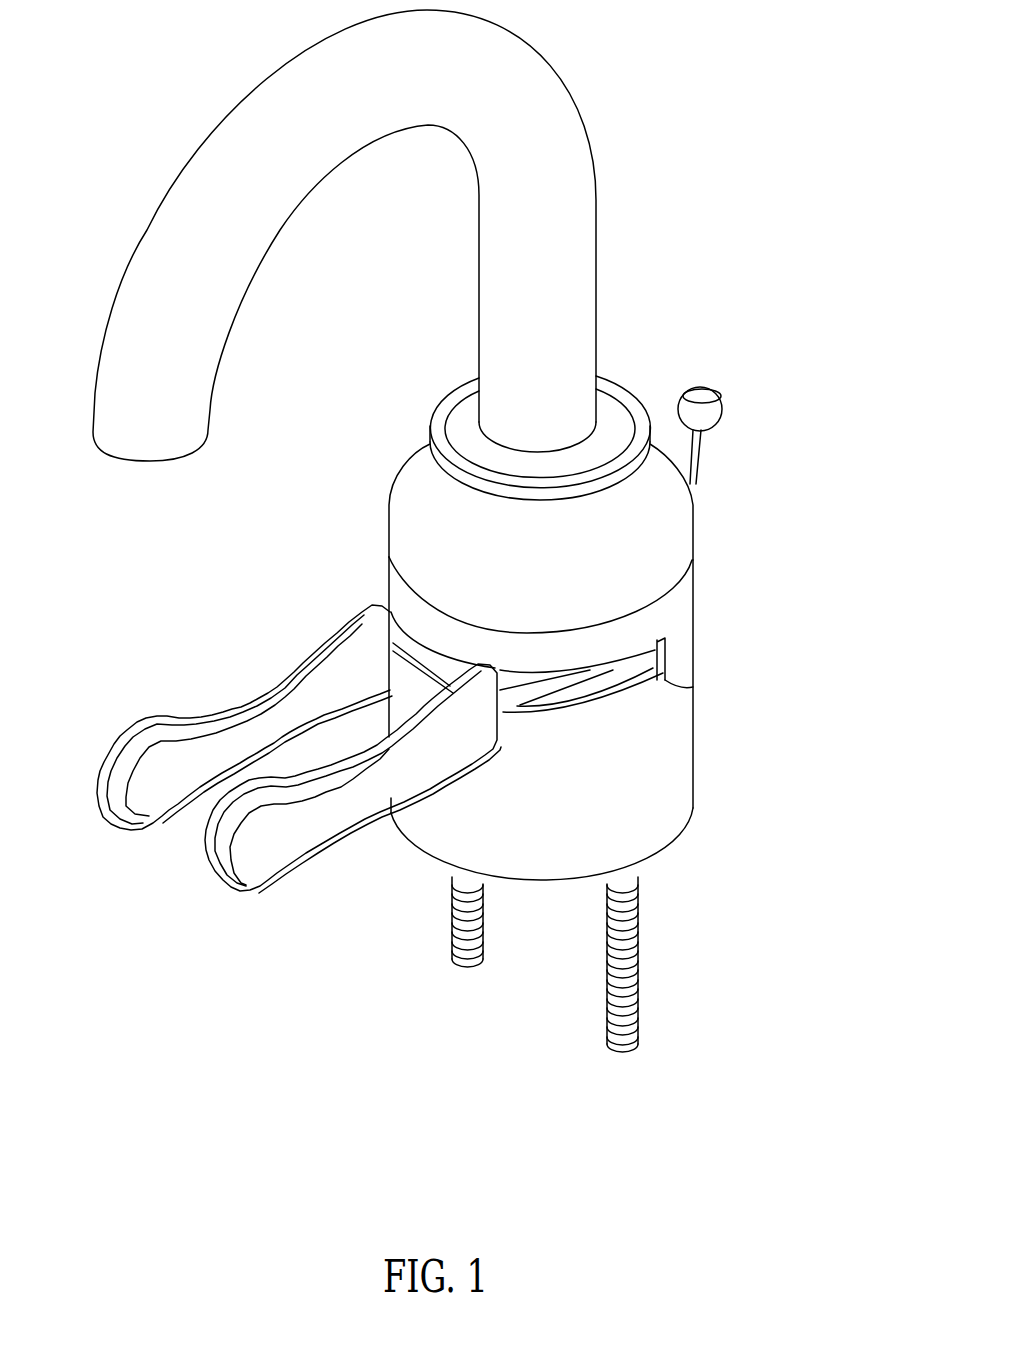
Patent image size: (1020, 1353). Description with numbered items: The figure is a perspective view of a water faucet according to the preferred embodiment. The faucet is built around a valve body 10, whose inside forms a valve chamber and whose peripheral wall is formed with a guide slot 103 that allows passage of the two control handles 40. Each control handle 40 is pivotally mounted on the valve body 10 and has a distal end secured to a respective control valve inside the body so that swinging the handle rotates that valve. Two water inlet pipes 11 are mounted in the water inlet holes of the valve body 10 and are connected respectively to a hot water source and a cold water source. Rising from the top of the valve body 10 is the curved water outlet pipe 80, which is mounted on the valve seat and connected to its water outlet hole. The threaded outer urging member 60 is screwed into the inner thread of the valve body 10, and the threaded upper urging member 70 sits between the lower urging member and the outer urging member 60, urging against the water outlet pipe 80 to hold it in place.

The valve body 10 is at (697, 812).
The water inlet pipe 11 is at (452, 952).
The guide slot 103 is at (657, 677).
The control handle 40 is at (210, 880).
The outer urging member 60 is at (695, 520).
The upper urging member 70 is at (643, 381).
The water outlet pipe 80 is at (598, 214).